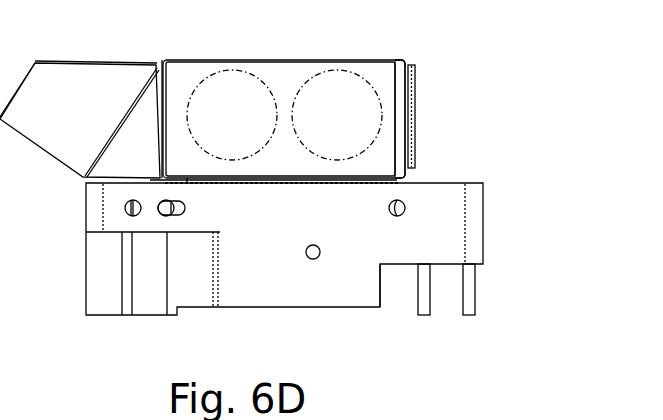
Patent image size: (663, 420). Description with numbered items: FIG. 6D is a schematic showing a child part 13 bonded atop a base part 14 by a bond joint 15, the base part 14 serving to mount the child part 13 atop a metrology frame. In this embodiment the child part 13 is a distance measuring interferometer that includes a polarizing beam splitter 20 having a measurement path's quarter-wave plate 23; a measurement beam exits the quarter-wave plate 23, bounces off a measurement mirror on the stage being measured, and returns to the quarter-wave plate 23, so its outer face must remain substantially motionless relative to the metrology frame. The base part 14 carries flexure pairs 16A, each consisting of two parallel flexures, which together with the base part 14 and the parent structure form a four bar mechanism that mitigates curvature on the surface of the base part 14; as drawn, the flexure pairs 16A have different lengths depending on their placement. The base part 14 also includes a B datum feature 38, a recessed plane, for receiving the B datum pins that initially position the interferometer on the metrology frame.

The child part 13 is at (417, 34).
The polarizing beam splitter 20 is at (390, 110).
The quarter-wave plate 23 is at (415, 145).
The bond joint 15 is at (417, 182).
The base part 14 is at (483, 211).
The flexure pairs 16A is at (148, 323).
The B datum feature 38 is at (380, 287).